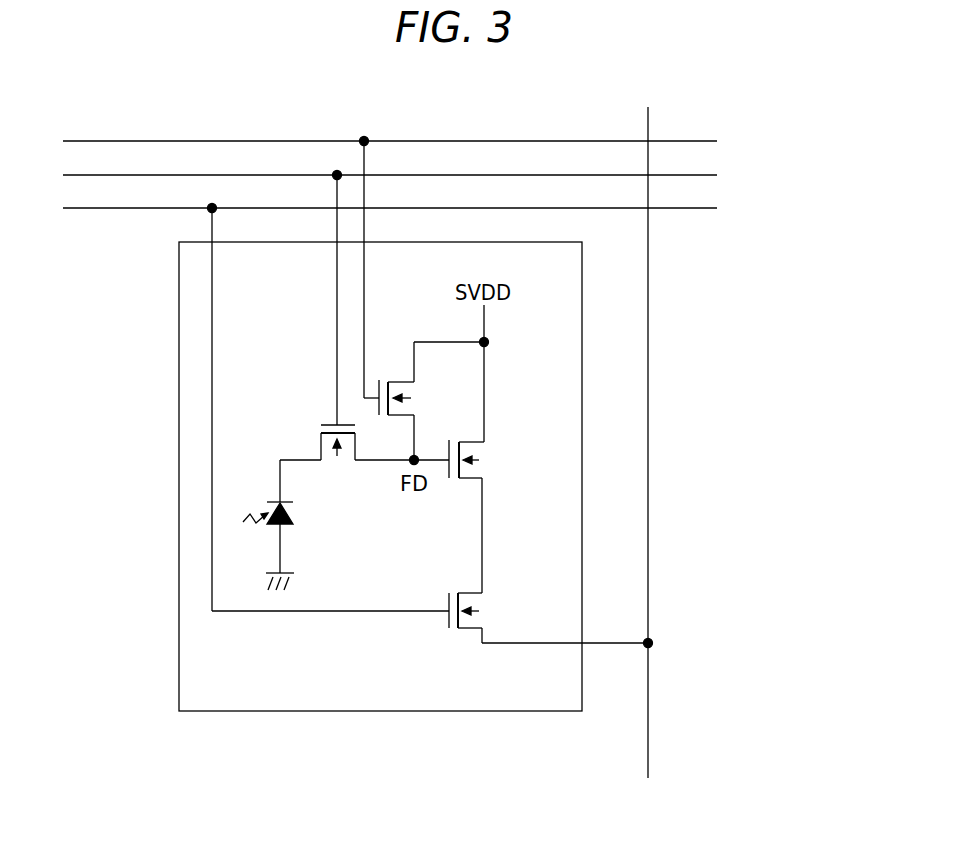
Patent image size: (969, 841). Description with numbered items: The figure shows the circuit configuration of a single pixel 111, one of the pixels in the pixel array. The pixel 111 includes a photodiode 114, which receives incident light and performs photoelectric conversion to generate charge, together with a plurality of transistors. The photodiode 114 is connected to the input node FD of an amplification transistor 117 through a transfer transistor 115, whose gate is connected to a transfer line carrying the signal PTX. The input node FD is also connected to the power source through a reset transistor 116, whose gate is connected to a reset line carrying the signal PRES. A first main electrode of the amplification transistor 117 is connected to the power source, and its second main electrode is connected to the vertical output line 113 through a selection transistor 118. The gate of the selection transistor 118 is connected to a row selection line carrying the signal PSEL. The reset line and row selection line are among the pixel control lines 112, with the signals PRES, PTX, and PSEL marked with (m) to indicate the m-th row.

The pixel 111 is at (179, 550).
The pixel control lines 112 is at (814, 123).
The vertical output line 113 is at (650, 695).
The photodiode 114 is at (293, 513).
The transfer transistor 115 is at (321, 432).
The reset transistor 116 is at (382, 380).
The amplification transistor 117 is at (480, 452).
The selection transistor 118 is at (478, 602).